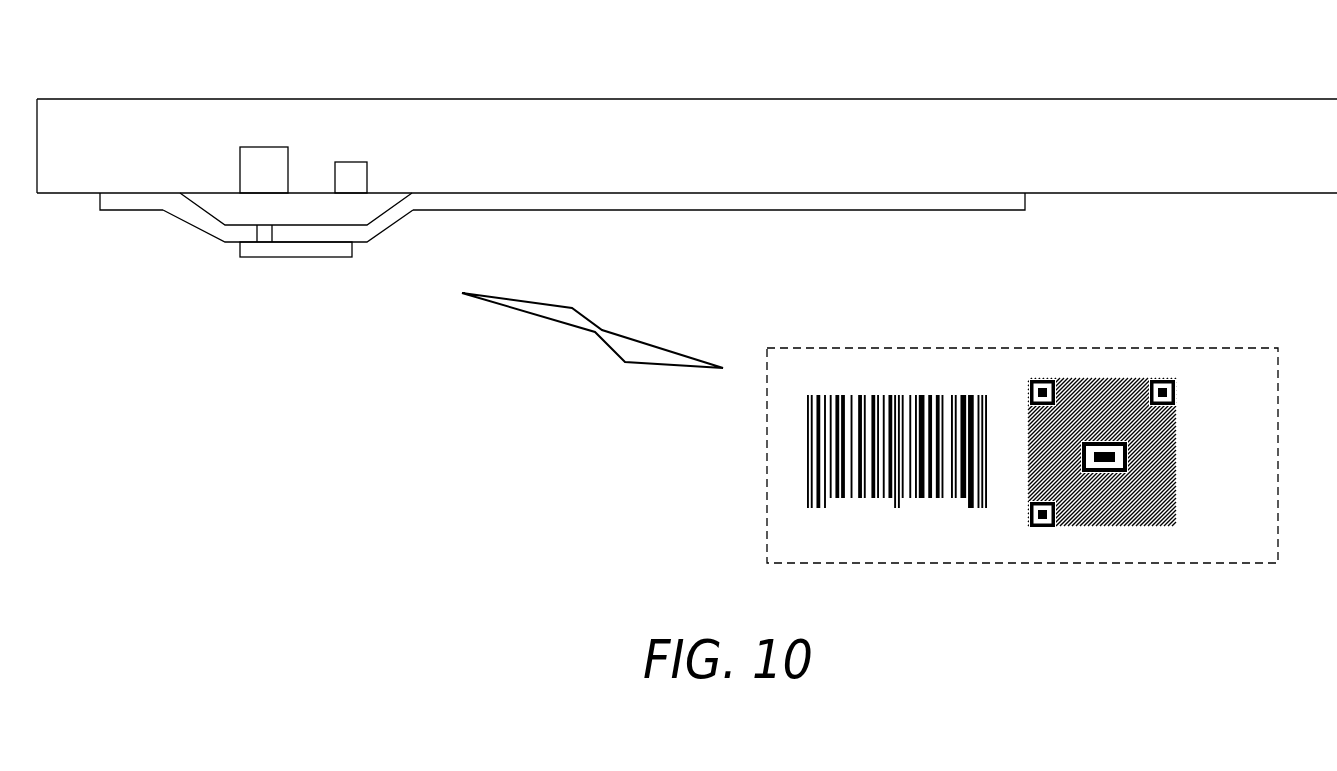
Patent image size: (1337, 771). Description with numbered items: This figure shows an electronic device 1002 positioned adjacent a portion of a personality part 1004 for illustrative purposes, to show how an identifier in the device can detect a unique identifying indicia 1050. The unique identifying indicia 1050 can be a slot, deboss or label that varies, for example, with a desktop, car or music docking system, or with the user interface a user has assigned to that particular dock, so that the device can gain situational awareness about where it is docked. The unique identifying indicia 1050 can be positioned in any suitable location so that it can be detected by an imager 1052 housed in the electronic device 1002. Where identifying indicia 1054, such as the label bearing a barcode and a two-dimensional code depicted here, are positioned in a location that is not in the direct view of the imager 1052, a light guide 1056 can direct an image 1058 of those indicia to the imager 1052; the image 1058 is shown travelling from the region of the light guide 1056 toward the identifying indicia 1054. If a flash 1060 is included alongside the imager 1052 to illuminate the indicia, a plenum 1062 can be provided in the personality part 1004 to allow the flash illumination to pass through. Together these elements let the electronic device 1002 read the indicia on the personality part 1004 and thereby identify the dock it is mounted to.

The electronic device 1002 is at (1197, 99).
The personality part 1004 is at (947, 210).
The plenum 1062 is at (212, 202).
The imager 1052 is at (263, 147).
The flash 1060 is at (350, 162).
The unique identifying indicia 1050 is at (260, 240).
The light guide 1056 is at (333, 258).
The image 1058 is at (648, 337).
The identifying indicia 1054 is at (1023, 348).